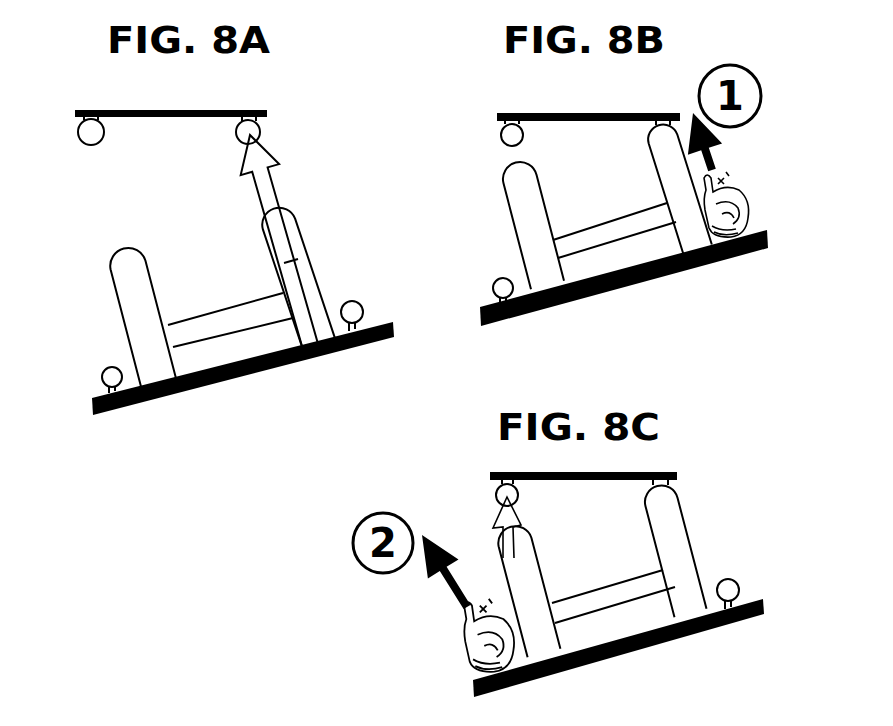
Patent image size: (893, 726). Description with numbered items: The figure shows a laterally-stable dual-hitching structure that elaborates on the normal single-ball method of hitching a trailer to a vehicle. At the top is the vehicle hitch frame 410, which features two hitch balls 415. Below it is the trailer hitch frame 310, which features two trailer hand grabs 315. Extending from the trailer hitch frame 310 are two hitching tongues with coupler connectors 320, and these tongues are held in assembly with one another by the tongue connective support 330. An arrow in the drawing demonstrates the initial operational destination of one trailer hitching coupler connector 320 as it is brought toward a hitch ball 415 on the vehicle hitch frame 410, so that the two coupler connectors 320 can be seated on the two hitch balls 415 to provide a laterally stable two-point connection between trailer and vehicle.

In FIG. 8A, the trailer hitch frame 310 is at (230, 387).
In FIG. 8B, the trailer hitch frame 310 is at (624, 278).
In FIG. 8C, the trailer hitch frame 310 is at (618, 648).
In FIG. 8A, the trailer hand grab 315 is at (363, 302).
In FIG. 8B, the trailer hand grab 315 is at (491, 282).
In FIG. 8C, the trailer hand grab 315 is at (728, 594).
In FIG. 8A, the hitching tongue with coupler connector 320 is at (130, 265).
In FIG. 8B, the hitching tongue with coupler connector 320 is at (607, 205).
In FIG. 8C, the hitching tongue with coupler connector 320 is at (600, 568).
In FIG. 8A, the tongue connective support 330 is at (198, 327).
In FIG. 8B, the tongue connective support 330 is at (614, 230).
In FIG. 8C, the tongue connective support 330 is at (613, 596).
In FIG. 8A, the vehicle hitch frame 410 is at (233, 106).
In FIG. 8B, the vehicle hitch frame 410 is at (588, 117).
In FIG. 8C, the vehicle hitch frame 410 is at (583, 476).
In FIG. 8A, the hitch ball 415 is at (85, 145).
In FIG. 8B, the hitch ball 415 is at (512, 133).
In FIG. 8C, the hitch ball 415 is at (507, 493).